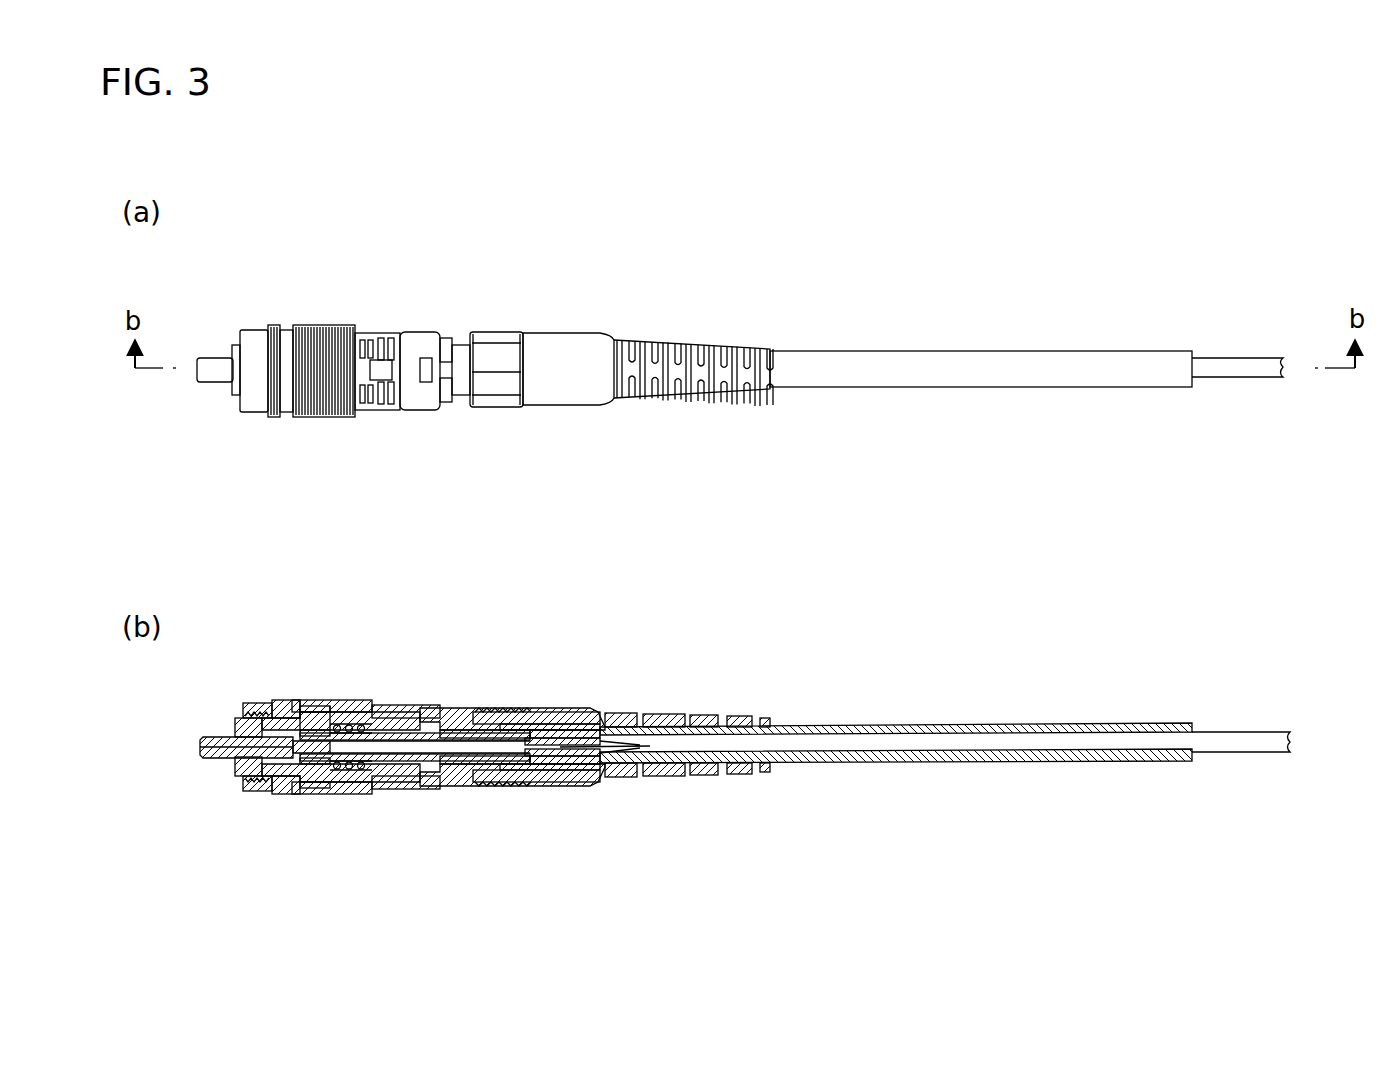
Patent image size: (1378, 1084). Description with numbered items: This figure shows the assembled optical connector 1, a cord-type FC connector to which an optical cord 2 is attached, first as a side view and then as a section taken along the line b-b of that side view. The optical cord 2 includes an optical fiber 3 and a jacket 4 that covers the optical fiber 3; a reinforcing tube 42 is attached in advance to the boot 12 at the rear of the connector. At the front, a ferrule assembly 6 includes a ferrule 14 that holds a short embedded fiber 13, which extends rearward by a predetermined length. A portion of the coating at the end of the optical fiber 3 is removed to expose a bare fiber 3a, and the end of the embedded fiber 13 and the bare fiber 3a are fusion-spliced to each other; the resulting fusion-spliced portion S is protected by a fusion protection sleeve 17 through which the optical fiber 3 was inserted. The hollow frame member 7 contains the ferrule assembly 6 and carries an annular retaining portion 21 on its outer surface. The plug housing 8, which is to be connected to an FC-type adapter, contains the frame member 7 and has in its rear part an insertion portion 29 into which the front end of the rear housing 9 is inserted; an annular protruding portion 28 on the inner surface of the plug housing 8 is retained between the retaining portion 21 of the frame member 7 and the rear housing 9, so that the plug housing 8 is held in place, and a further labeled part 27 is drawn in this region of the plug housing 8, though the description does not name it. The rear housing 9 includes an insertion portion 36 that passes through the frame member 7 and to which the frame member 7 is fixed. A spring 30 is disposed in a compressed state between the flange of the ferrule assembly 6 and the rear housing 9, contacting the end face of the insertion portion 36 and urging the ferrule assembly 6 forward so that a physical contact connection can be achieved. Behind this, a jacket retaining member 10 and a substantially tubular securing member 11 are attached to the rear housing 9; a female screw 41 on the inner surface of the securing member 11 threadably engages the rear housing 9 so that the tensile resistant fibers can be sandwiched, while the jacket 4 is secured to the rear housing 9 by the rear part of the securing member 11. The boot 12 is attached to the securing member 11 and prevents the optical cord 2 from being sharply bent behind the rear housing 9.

The optical connector 1 is at (672, 274).
The optical cord 2 is at (1230, 365).
The optical fiber 3 is at (572, 757).
The bare fiber 3a is at (482, 730).
The jacket 4 is at (675, 712).
The ferrule assembly 6 is at (222, 386).
The frame member 7 is at (237, 345).
The plug housing 8 is at (320, 330).
The rear housing 9 is at (423, 343).
The jacket retaining member 10 is at (548, 771).
The securing member 11 is at (497, 338).
The boot 12 is at (580, 342).
The embedded fiber 13 is at (235, 776).
The ferrule 14 is at (217, 366).
The fusion protection sleeve 17 is at (446, 762).
The retaining portion 21 is at (283, 700).
The threaded portion 27 is at (258, 791).
The protruding portion 28 is at (305, 788).
The insertion portion 29 is at (322, 712).
The spring 30 is at (315, 772).
The insertion portion 36 is at (370, 720).
The female screw 41 is at (518, 711).
The reinforcing tube 42 is at (930, 360).
The fusion-spliced portion S is at (422, 766).